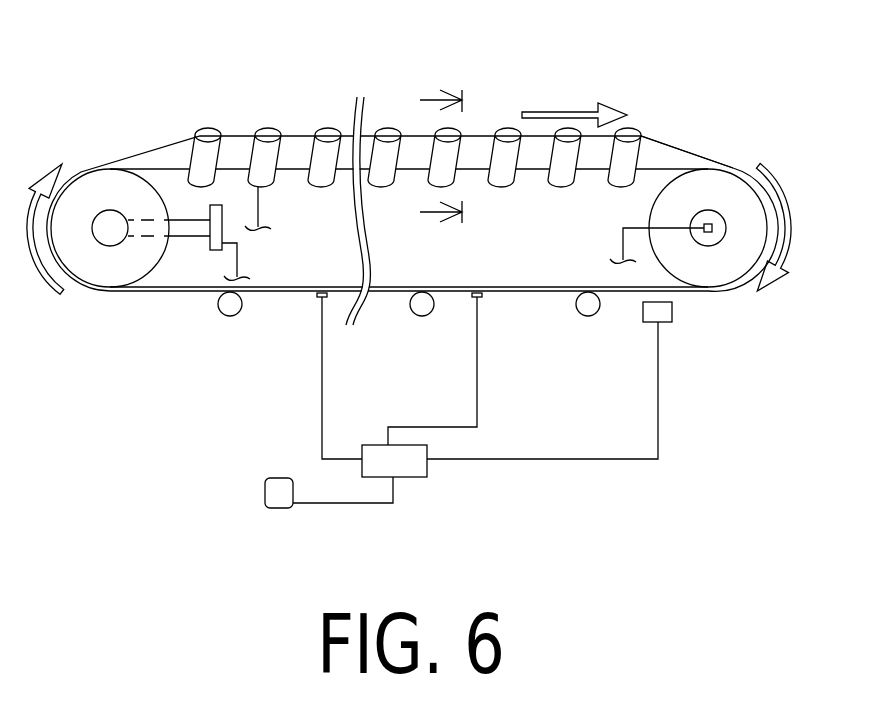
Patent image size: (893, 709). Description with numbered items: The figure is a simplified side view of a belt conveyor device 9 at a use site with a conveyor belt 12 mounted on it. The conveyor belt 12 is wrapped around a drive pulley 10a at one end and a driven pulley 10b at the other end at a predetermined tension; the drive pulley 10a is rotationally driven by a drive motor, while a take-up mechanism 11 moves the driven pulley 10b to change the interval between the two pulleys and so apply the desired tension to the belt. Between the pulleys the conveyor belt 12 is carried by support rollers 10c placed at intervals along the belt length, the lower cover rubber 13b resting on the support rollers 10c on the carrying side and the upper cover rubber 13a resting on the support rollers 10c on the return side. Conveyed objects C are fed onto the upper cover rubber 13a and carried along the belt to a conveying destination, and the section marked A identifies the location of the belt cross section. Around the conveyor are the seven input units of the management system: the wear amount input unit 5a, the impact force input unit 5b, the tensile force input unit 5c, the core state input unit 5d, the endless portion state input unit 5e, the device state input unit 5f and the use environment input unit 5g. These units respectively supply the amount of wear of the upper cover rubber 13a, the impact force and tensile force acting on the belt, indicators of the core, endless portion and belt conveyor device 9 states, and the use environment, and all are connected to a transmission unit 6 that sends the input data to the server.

The belt conveyor device 9 is at (137, 104).
The drive pulley 10a is at (712, 192).
The driven pulley 10b is at (98, 183).
The support rollers 10c is at (508, 133).
The take-up mechanism 11 is at (187, 238).
The conveyor belt 12 is at (656, 142).
The upper cover rubber 13a is at (535, 295).
The lower cover rubber 13b is at (595, 160).
The wear amount input unit 5a is at (318, 297).
The impact force input unit 5b is at (262, 187).
The tensile force input unit 5c is at (222, 228).
The core state input unit 5d is at (660, 318).
The endless portion state input unit 5e is at (470, 298).
The device state input unit 5f is at (710, 232).
The use environment input unit 5g is at (265, 490).
The transmission unit 6 is at (412, 477).
The conveyed objects C is at (226, 106).
The section line A is at (432, 155).